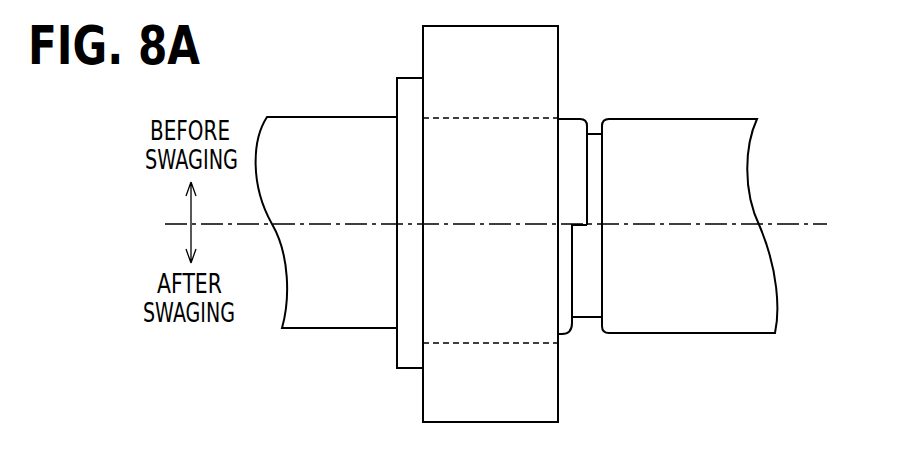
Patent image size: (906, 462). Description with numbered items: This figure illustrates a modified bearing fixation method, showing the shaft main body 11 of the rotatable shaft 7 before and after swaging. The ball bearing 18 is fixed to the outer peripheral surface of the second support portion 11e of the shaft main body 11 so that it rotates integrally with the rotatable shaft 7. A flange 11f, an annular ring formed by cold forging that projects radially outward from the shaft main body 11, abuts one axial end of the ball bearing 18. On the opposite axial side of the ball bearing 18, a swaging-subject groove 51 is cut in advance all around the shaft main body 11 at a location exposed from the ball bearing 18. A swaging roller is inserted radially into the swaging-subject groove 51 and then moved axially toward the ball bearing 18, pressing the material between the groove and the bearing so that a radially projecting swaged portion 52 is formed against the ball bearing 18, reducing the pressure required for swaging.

The shaft main body 11 is at (325, 328).
The flange 11f is at (410, 173).
The second support portion 11e is at (477, 116).
The ball bearing 18 is at (558, 64).
The rotatable shaft 7 is at (696, 108).
The swaging-subject groove 51 is at (597, 178).
The swaged portion 52 is at (566, 340).